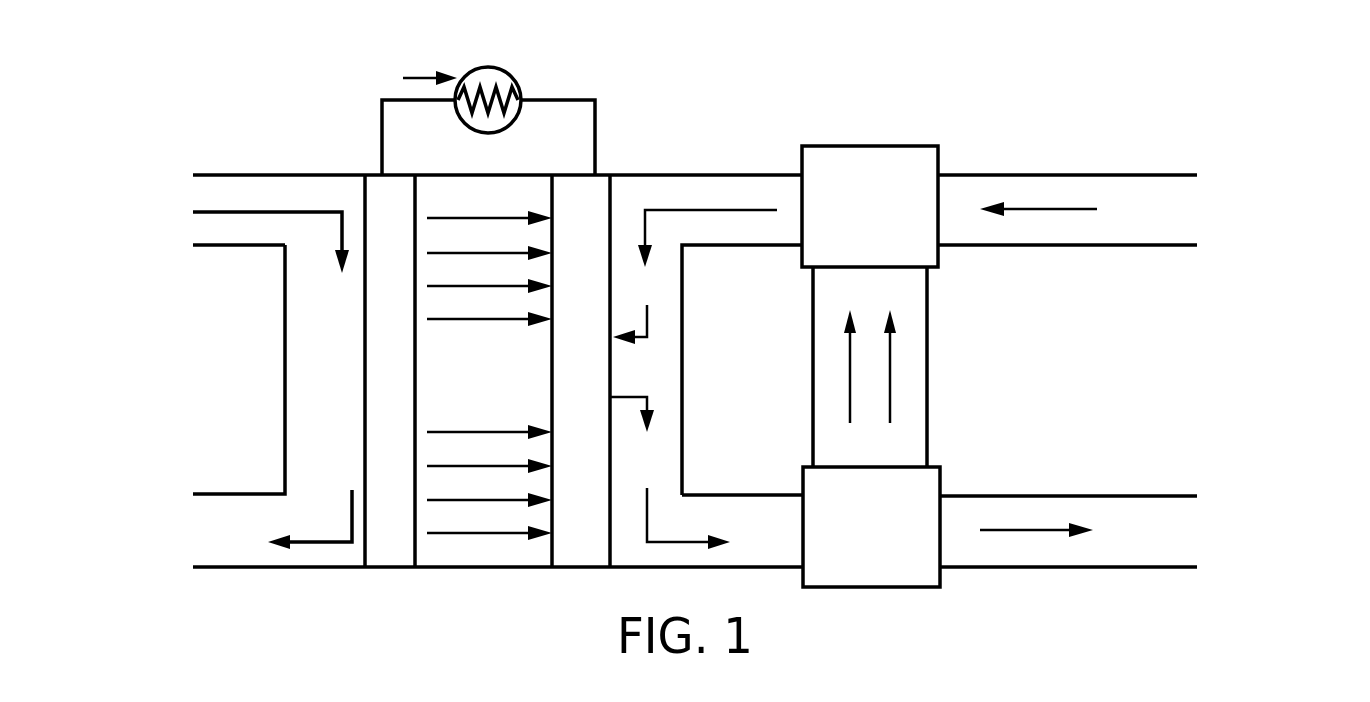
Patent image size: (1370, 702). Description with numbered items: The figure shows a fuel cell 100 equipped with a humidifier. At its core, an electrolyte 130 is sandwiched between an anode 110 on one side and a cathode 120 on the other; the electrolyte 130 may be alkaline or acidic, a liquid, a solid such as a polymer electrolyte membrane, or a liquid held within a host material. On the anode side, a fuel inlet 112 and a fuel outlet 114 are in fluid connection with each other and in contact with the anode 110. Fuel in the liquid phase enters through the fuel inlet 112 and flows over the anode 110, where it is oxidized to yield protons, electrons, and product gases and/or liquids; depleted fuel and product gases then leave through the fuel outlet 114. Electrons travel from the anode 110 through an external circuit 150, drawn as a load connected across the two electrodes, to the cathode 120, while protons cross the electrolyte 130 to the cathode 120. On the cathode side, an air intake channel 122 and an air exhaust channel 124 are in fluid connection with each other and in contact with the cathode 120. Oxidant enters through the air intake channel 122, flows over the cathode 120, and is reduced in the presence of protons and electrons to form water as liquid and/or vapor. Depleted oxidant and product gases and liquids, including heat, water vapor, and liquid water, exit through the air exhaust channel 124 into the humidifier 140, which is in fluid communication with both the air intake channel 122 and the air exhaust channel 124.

The fuel cell 100 is at (770, 97).
The anode 110 is at (397, 563).
The fuel inlet 112 is at (217, 185).
The fuel outlet 114 is at (288, 563).
The cathode 120 is at (597, 185).
The air intake channel 122 is at (1013, 187).
The air exhaust channel 124 is at (997, 562).
The electrolyte 130 is at (505, 563).
The humidifier 140 is at (923, 367).
The external circuit 150 is at (560, 100).